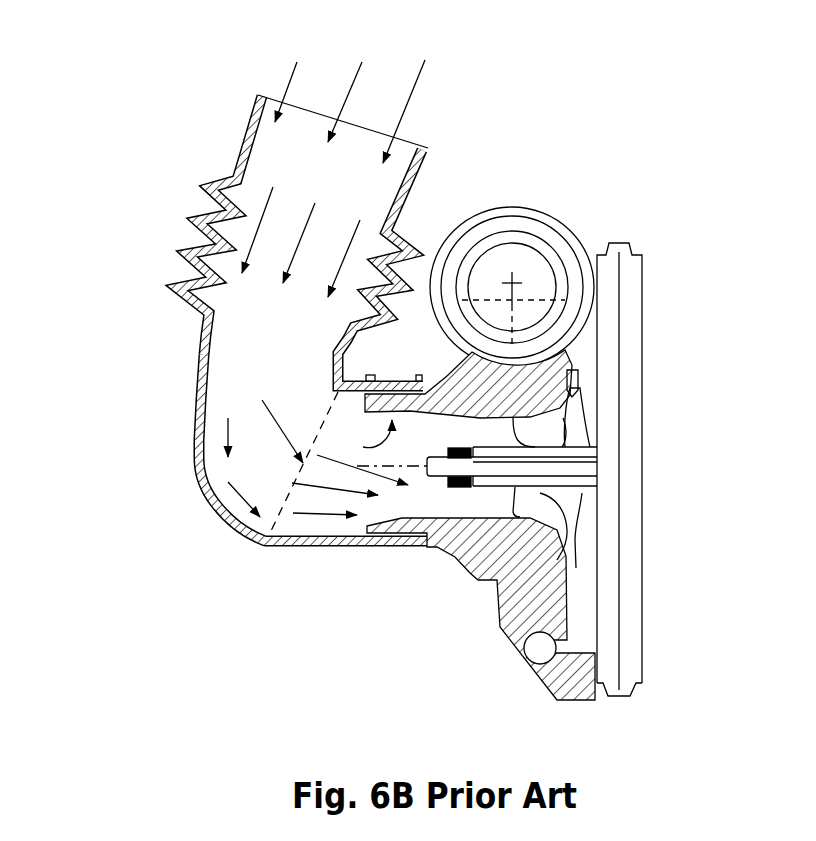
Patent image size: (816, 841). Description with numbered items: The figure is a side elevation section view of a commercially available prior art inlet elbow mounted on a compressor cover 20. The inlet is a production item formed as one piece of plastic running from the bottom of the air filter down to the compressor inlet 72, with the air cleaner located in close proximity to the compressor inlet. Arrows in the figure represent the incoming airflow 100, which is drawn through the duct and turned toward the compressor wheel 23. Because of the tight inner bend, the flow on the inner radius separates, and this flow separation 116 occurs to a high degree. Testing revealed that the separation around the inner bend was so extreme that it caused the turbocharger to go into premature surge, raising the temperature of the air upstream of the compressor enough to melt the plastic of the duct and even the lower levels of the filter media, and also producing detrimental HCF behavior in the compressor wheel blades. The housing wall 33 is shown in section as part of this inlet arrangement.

The incoming airflow 100 is at (352, 52).
The inlet housing wall 33 is at (200, 495).
The compressor inlet 72 is at (305, 542).
The compressor cover 20 is at (510, 580).
The compressor wheel 23 is at (567, 448).
The flow separation 116 is at (573, 383).